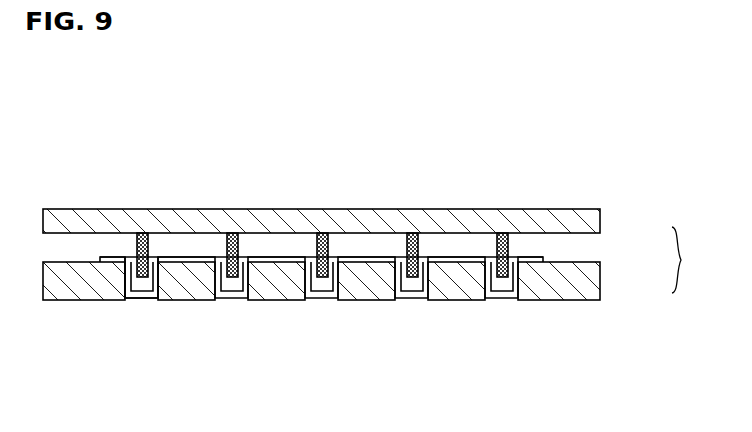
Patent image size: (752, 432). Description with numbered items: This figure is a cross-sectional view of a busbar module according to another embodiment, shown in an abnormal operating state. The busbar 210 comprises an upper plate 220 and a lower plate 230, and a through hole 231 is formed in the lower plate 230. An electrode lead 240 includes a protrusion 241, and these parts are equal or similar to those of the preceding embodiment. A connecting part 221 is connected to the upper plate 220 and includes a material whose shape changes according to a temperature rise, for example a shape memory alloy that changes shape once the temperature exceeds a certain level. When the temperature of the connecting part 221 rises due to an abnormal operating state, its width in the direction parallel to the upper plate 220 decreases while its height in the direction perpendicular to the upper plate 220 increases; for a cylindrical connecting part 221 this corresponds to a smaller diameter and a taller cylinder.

The busbar 210 is at (695, 260).
The upper plate 220 is at (601, 222).
The connecting part 221 is at (503, 233).
The lower plate 230 is at (601, 281).
The through hole 231 is at (143, 294).
The electrode lead 240 is at (530, 257).
The protrusion 241 is at (502, 294).